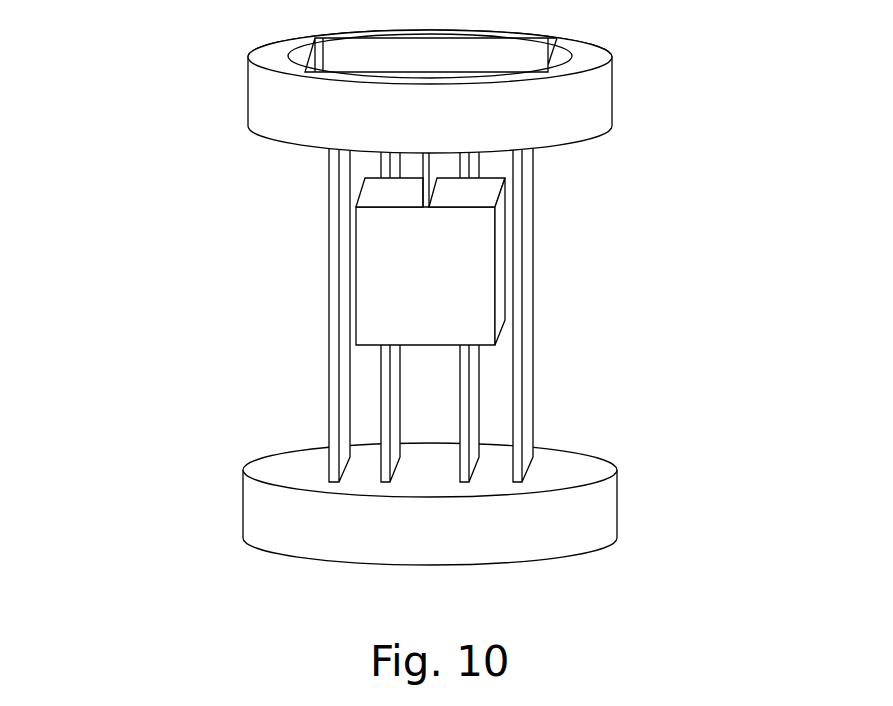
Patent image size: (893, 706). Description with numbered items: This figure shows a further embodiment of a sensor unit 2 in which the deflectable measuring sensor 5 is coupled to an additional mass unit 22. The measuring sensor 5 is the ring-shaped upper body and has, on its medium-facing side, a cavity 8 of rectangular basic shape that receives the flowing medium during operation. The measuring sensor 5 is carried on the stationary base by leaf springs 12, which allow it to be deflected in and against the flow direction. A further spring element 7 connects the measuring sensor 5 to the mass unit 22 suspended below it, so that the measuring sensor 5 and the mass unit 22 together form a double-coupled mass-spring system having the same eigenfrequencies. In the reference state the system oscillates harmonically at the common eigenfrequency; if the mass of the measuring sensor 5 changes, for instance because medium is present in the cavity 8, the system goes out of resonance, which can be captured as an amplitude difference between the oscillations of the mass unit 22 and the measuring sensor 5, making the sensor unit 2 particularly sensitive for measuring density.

The sensor unit 2 is at (415, 286).
The measuring sensor 5 is at (412, 80).
The spring element 7 is at (423, 163).
The cavity 8 is at (348, 62).
The leaf springs 12 is at (333, 391).
The mass unit 22 is at (472, 247).